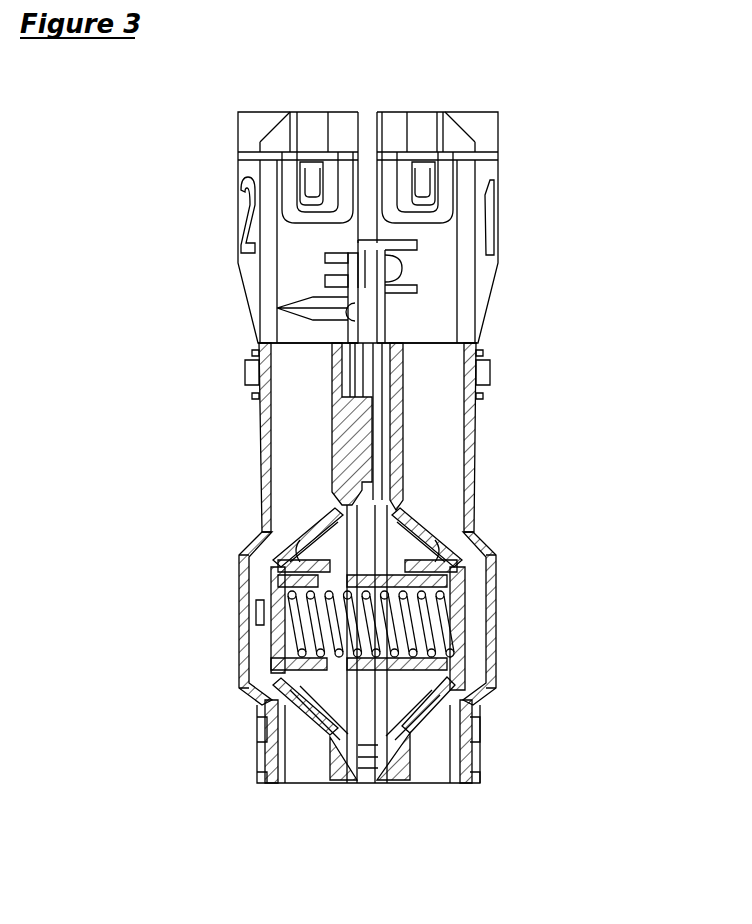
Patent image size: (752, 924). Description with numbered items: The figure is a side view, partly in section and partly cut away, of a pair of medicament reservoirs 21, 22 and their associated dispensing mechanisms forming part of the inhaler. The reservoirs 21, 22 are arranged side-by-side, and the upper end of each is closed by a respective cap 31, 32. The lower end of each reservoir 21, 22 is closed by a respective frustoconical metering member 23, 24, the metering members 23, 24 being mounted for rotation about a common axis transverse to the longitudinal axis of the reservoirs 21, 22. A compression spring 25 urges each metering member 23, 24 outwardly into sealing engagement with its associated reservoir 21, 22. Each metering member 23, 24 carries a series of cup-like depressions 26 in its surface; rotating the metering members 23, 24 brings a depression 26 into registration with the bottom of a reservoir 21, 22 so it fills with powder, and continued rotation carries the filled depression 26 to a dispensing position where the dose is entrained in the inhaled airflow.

The cap 31 is at (482, 128).
The cap 32 is at (250, 146).
The medicament reservoir 21 is at (470, 437).
The medicament reservoir 22 is at (258, 443).
The cup-like depressions 26 is at (305, 540).
The compression spring 25 is at (380, 626).
The frustoconical metering member 24 is at (272, 668).
The frustoconical metering member 23 is at (422, 672).